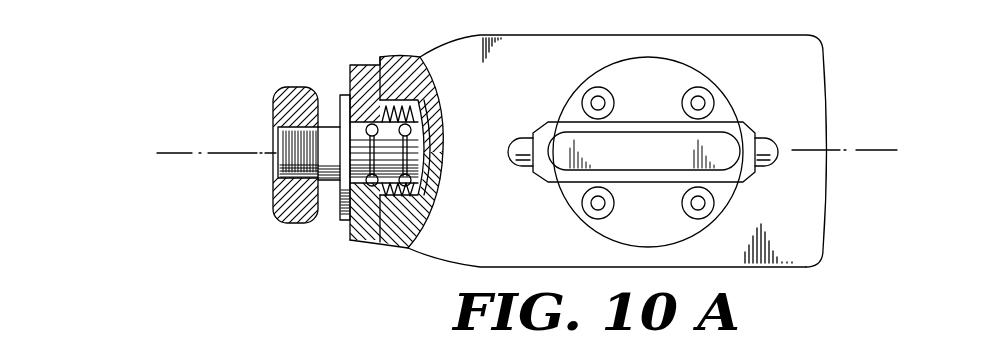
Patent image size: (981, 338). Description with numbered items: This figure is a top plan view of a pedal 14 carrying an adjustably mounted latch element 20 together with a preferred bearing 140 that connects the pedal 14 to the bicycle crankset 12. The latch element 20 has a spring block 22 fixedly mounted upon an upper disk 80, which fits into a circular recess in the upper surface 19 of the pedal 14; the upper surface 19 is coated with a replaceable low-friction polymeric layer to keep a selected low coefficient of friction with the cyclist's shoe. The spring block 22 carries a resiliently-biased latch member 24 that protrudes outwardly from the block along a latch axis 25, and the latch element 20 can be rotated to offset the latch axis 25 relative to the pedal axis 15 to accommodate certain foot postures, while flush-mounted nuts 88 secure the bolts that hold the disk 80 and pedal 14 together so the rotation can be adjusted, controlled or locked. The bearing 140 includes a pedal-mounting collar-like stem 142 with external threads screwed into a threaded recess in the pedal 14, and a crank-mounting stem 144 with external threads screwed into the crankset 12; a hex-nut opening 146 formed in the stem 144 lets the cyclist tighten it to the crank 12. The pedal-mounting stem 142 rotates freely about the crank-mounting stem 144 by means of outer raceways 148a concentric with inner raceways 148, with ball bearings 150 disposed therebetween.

The crankset 12 is at (290, 108).
The pedal 14 is at (805, 73).
The pedal axis 15 is at (216, 151).
The upper surface 19 is at (805, 227).
The latch element 20 is at (610, 147).
The spring block 22 is at (742, 130).
The latch member 24 is at (770, 157).
The latch axis 25 is at (853, 148).
The upper disk 80 is at (563, 196).
The flush-mounted nuts 88 is at (713, 93).
The bearing 140 is at (337, 215).
The pedal-mounting stem 142 is at (430, 102).
The crank-mounting stem 144 is at (277, 196).
The hex-nut opening 146 is at (288, 158).
The raceways 148 is at (420, 150).
The outer raceways 148a is at (382, 64).
The ball bearings 150 is at (409, 130).